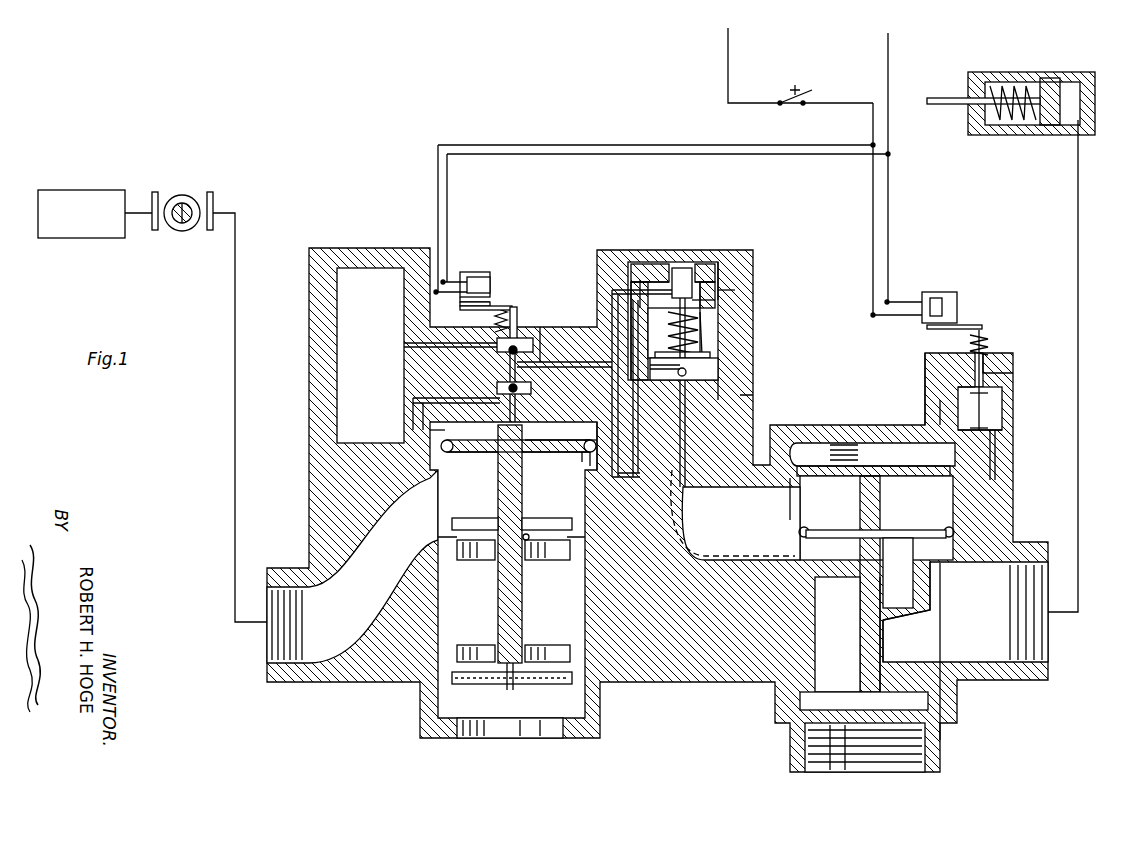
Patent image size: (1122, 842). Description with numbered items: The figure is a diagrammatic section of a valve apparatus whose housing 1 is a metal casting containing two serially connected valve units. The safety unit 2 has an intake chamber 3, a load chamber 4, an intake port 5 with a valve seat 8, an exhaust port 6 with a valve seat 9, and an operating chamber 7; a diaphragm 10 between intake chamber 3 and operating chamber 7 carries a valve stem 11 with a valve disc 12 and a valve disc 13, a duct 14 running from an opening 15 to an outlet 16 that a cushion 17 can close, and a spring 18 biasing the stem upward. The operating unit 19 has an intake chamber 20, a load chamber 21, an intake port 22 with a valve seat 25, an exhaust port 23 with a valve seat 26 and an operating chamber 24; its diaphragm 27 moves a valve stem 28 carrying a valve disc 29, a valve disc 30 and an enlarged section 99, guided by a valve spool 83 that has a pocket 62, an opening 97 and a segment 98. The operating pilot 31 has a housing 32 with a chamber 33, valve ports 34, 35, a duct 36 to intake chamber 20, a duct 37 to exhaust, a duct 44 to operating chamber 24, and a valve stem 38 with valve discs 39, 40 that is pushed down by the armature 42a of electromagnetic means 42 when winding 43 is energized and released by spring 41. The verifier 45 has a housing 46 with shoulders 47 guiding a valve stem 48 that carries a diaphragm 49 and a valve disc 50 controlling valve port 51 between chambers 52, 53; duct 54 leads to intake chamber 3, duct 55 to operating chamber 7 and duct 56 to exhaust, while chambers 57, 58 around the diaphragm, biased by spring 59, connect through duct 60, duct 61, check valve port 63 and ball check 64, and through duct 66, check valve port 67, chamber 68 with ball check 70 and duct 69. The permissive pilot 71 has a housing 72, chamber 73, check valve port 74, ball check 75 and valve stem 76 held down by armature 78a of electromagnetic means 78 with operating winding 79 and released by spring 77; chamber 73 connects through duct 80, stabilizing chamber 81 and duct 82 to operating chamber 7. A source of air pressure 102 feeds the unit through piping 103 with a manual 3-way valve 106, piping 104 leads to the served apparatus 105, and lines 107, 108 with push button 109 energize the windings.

The housing 1 is at (672, 682).
The safety unit 2 is at (490, 771).
The intake chamber 3 is at (295, 635).
The load chamber 4 is at (604, 607).
The intake port 5 is at (483, 560).
The exhaust port 6 is at (480, 645).
The operating chamber 7 is at (583, 440).
The valve seat 8 is at (438, 540).
The valve seat 9 is at (466, 686).
The diaphragm 10 is at (580, 464).
The valve stem 11 is at (522, 480).
The valve disc 12 is at (535, 518).
The valve disc 13 is at (548, 686).
The duct 14 is at (495, 470).
The opening 15 is at (490, 518).
The outlet 16 is at (498, 444).
The cushion 17 is at (530, 445).
The spring 18 is at (535, 555).
The operating unit 19 is at (850, 792).
The intake chamber 20 is at (741, 523).
The load chamber 21 is at (1048, 644).
The intake port 22 is at (925, 530).
The exhaust port 23 is at (828, 680).
The operating chamber 24 is at (905, 450).
The valve seat 25 is at (803, 527).
The valve seat 26 is at (945, 700).
The diaphragm 27 is at (794, 514).
The valve stem 28 is at (880, 496).
The valve disc 29 is at (892, 530).
The valve disc 30 is at (822, 706).
The operating pilot 31 is at (1004, 301).
The housing 32 is at (925, 365).
The chamber 33 is at (995, 405).
The valve port 34 is at (992, 440).
The valve port 35 is at (988, 393).
The duct 36 is at (996, 468).
The duct 37 is at (1013, 370).
The valve stem 38 is at (982, 342).
The valve disc 39 is at (988, 428).
The valve disc 40 is at (958, 395).
The spring 41 is at (968, 343).
The electromagnetic means 42 is at (940, 292).
The armature 42a is at (965, 325).
The winding 43 is at (922, 315).
The duct 44 is at (940, 420).
The verifier 45 is at (672, 207).
The housing 46 is at (735, 270).
The shoulders 47 is at (700, 308).
The valve stem 48 is at (674, 333).
The diaphragm 49 is at (710, 355).
The valve disc 50 is at (686, 268).
The valve port 51 is at (640, 280).
The chamber 52 is at (662, 264).
The chamber 53 is at (710, 275).
The duct 54 is at (620, 262).
The duct 55 is at (612, 305).
The duct 56 is at (718, 294).
The chamber 57 is at (712, 318).
The chamber 58 is at (735, 405).
The spring 59 is at (712, 344).
The duct 60 is at (722, 372).
The duct 61 is at (690, 520).
The pocket 62 is at (825, 535).
The check valve port 63 is at (680, 395).
The ball check 64 is at (668, 370).
The duct 66 is at (565, 362).
The check valve port 67 is at (500, 392).
The chamber 68 is at (585, 446).
The duct 69 is at (413, 400).
The ball check 70 is at (497, 412).
The permissive pilot 71 is at (497, 234).
The housing 72 is at (548, 345).
The chamber 73 is at (517, 340).
The check valve port 74 is at (503, 356).
The ball check 75 is at (468, 306).
The valve stem 76 is at (516, 334).
The spring 77 is at (490, 310).
The electromagnetic means 78 is at (492, 280).
The armature 78a is at (506, 308).
The operating winding 79 is at (470, 276).
The duct 80 is at (404, 345).
The stabilizing chamber 81 is at (368, 268).
The duct 82 is at (413, 427).
The valve spool 83 is at (816, 645).
The opening 97 is at (925, 655).
The segment 98 is at (920, 615).
The enlarged section 99 is at (886, 550).
The source of air pressure 102 is at (72, 188).
The piping 103 is at (138, 212).
The piping 104 is at (1078, 228).
The served apparatus 105 is at (1015, 135).
The manual 3-way valve 106 is at (184, 195).
The line 107 is at (728, 55).
The line 108 is at (888, 60).
The push button 109 is at (803, 98).